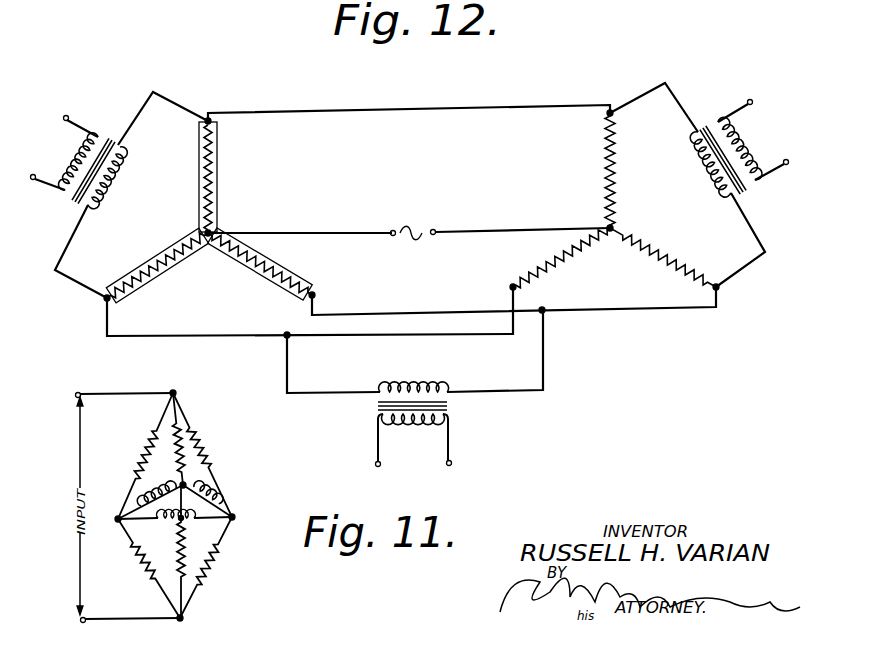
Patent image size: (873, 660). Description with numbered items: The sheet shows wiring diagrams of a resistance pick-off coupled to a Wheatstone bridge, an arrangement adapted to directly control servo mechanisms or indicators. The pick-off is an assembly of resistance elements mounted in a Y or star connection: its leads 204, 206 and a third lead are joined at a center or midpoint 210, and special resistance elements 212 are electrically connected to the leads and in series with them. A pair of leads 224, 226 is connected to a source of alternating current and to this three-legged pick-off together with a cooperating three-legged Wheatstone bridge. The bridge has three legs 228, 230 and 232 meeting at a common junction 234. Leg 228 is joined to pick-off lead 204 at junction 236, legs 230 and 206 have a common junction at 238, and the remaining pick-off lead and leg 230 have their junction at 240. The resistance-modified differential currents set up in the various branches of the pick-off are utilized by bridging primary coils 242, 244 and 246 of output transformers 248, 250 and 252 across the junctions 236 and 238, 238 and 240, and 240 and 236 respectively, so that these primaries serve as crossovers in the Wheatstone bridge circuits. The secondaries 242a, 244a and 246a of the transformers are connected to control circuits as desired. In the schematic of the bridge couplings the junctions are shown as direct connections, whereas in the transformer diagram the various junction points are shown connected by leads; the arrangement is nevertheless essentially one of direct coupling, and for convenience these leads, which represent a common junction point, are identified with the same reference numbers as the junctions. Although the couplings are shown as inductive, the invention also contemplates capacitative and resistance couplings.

In FIG. 11, the lead 204 is at (199, 590).
In FIG. 11, the lead 206 is at (164, 582).
In FIG. 12, the center or midpoint 210 is at (483, 109).
In FIG. 11, the center or midpoint 210 is at (181, 618).
In FIG. 12, the special resistance element 212 is at (199, 185).
In FIG. 11, the special resistance element 212 is at (163, 552).
In FIG. 12, the lead 224 is at (383, 224).
In FIG. 11, the lead 224 is at (112, 618).
In FIG. 12, the lead 226 is at (495, 228).
In FIG. 11, the lead 226 is at (122, 393).
In FIG. 12, the leg 228 is at (664, 267).
In FIG. 11, the leg 228 is at (220, 491).
In FIG. 12, the leg 230 is at (562, 264).
In FIG. 11, the leg 230 is at (122, 488).
In FIG. 12, the leg 232 is at (614, 168).
In FIG. 11, the leg 232 is at (175, 430).
In FIG. 12, the common junction 234 is at (608, 227).
In FIG. 11, the common junction 234 is at (174, 392).
In FIG. 12, the junction 236 is at (315, 295).
In FIG. 11, the junction 236 is at (233, 517).
In FIG. 12, the common junction 238 is at (106, 300).
In FIG. 11, the common junction 238 is at (117, 521).
In FIG. 12, the junction 240 is at (209, 121).
In FIG. 11, the junction 240 is at (185, 480).
In FIG. 12, the primary coil 242 is at (444, 387).
In FIG. 11, the primary coil 242 is at (175, 526).
In FIG. 12, the secondary 242a is at (414, 440).
In FIG. 12, the primary coil 244 is at (120, 156).
In FIG. 11, the primary coil 244 is at (157, 498).
In FIG. 12, the secondary 244a is at (64, 153).
In FIG. 12, the primary coil 246 is at (710, 167).
In FIG. 11, the primary coil 246 is at (207, 512).
In FIG. 12, the secondary 246a is at (755, 140).
In FIG. 12, the transformer 248 is at (435, 377).
In FIG. 12, the transformer 250 is at (115, 127).
In FIG. 12, the transformer 252 is at (730, 103).